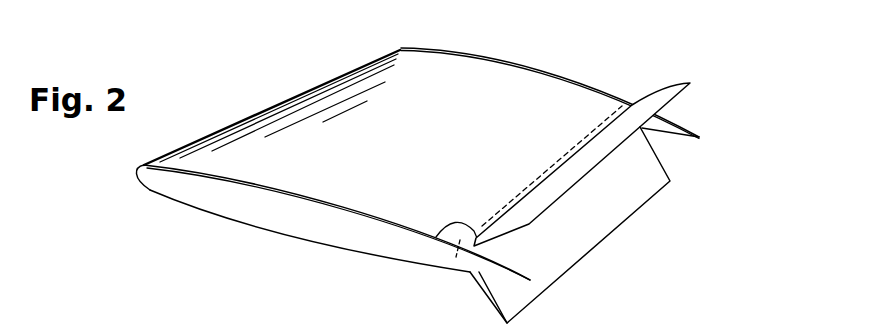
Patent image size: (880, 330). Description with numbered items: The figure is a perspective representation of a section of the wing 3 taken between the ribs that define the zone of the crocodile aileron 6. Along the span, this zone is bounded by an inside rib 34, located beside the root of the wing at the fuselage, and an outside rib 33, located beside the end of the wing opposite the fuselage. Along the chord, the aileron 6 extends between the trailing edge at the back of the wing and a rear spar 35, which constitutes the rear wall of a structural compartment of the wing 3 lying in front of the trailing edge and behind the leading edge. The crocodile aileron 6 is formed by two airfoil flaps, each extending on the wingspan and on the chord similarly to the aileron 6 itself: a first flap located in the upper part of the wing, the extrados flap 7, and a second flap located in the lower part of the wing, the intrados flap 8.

The wing 3 is at (417, 145).
The outside rib 33 is at (508, 63).
The inside rib 34 is at (238, 199).
The rear spar 35 is at (434, 238).
The aileron 6 is at (595, 175).
The extrados flap 7 is at (653, 104).
The intrados flap 8 is at (598, 220).